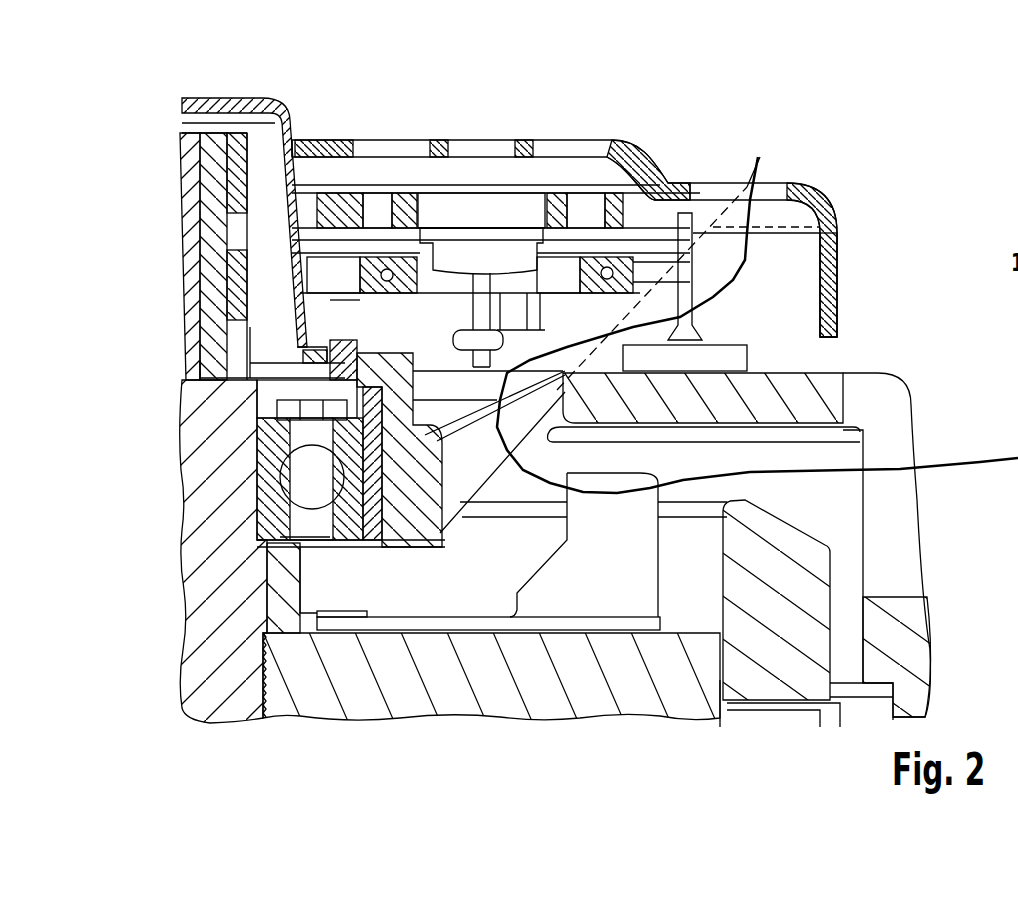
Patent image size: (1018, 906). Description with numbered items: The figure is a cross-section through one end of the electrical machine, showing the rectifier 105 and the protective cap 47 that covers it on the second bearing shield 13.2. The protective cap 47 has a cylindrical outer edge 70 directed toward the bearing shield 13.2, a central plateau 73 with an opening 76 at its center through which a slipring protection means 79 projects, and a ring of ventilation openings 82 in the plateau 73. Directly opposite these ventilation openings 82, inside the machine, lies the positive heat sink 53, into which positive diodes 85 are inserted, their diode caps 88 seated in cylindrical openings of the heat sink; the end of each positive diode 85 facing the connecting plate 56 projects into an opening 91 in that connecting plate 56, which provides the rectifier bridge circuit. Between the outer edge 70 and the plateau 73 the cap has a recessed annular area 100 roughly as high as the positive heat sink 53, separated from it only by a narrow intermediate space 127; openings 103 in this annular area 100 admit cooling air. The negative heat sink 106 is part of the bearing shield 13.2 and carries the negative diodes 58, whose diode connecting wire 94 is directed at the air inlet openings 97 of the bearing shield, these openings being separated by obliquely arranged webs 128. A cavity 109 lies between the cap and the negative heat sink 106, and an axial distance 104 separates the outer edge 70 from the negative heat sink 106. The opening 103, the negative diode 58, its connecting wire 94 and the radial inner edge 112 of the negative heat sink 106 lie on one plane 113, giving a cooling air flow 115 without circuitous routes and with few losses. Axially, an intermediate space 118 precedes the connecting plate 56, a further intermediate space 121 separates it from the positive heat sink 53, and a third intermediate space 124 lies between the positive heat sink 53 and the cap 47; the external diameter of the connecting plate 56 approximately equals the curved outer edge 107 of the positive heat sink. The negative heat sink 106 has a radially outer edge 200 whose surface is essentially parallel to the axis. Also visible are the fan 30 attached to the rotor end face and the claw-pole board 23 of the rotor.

The slipring protection means 79 is at (182, 105).
The third intermediate space 124 is at (310, 173).
The further intermediate space 121 is at (312, 252).
The connecting plate 56 is at (360, 293).
The intermediate space 118 is at (307, 338).
The opening 76 is at (292, 140).
The central plateau 73 is at (329, 140).
The ventilation openings 82 is at (367, 148).
The positive heat sink 53 is at (403, 193).
The positive diodes 85 is at (457, 178).
The diode caps 88 is at (513, 207).
The opening 91 is at (560, 270).
The narrow intermediate space 127 is at (632, 184).
The curved outer edge 107 is at (628, 213).
The rectifier 105 is at (640, 225).
The openings 103 is at (742, 197).
The recessed annular area 100 is at (777, 182).
The cavity 109 is at (813, 182).
The protective cap 47 is at (852, 208).
The plane 113 is at (838, 235).
The cylindrical outer edge 70 is at (838, 260).
The diode connecting wire 94 is at (690, 300).
The negative diodes 58 is at (728, 357).
The axial distance 104 is at (825, 355).
The radially outer edge 200 is at (855, 400).
The negative heat sink 106 is at (795, 437).
The cooling air flow 115 is at (997, 456).
The second bearing shield 13.2 is at (918, 632).
The webs 128 is at (458, 487).
The air inlet openings 97 is at (498, 512).
The rotor cup 112 is at (550, 395).
The fan 30 is at (617, 603).
The claw-pole board 23 is at (677, 703).